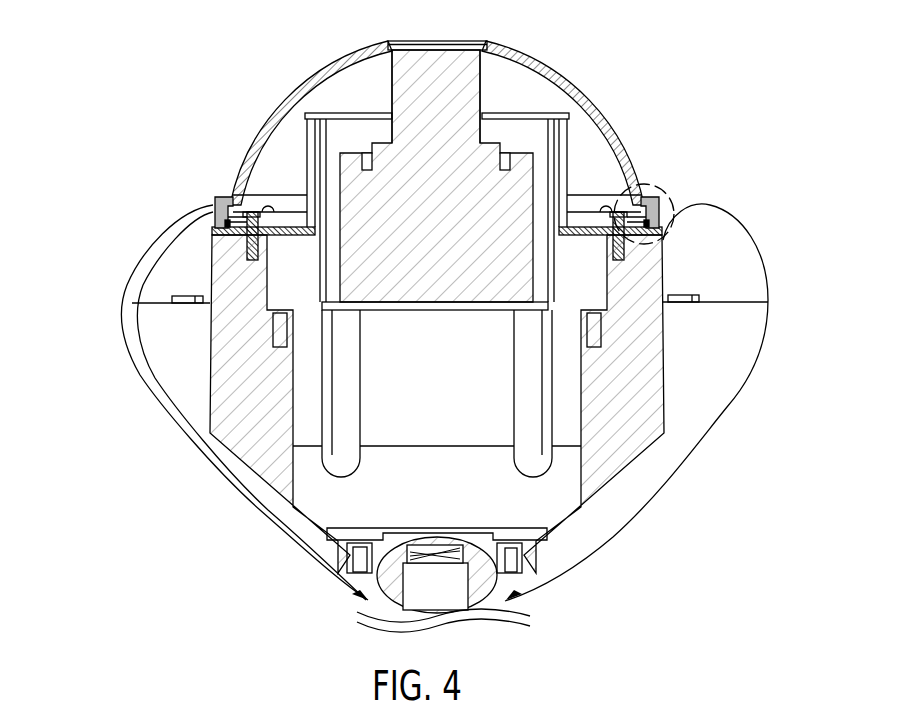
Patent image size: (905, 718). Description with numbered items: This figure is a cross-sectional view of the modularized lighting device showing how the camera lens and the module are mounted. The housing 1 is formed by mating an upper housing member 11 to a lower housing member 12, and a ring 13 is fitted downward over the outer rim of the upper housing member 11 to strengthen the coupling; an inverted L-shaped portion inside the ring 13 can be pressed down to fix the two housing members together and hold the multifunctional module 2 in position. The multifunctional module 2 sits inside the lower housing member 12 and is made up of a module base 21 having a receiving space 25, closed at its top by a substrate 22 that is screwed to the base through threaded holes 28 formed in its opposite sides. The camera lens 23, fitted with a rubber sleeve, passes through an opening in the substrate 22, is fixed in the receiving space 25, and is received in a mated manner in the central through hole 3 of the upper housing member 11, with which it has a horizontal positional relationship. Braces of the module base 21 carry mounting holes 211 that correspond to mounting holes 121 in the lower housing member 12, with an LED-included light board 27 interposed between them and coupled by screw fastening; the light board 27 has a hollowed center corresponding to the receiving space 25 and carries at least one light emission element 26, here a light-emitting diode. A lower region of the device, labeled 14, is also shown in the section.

The housing 1 is at (172, 146).
The upper housing member 11 is at (318, 70).
The lower housing member 12 is at (429, 402).
The mounting holes 121 is at (213, 260).
The ring 13 is at (660, 192).
The base ring 14 is at (392, 606).
The multifunctional module 2 is at (158, 216).
The mounting holes 211 is at (213, 222).
The module base 21 is at (624, 210).
The substrate 22 is at (317, 113).
The camera lens 23 is at (482, 70).
The receiving space 25 is at (374, 159).
The light emission element 26 is at (604, 206).
The light board 27 is at (662, 240).
The threaded holes 28 is at (555, 115).
The through hole 3 is at (398, 42).